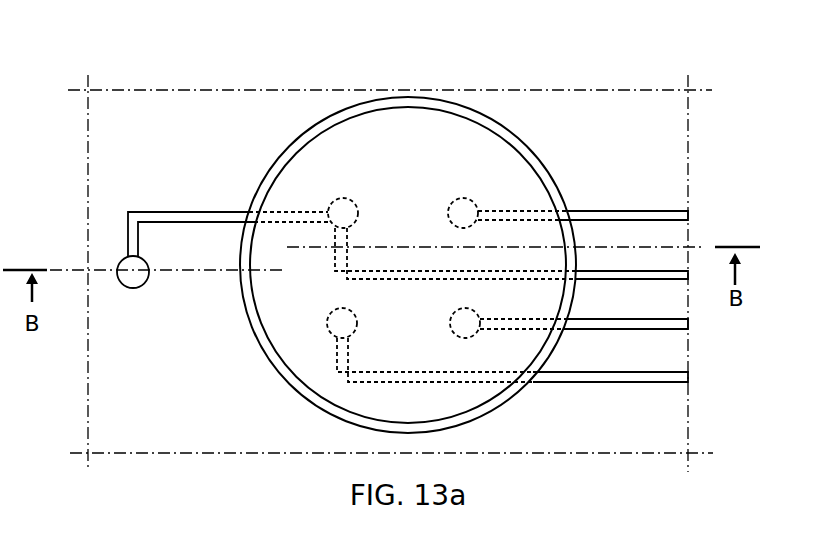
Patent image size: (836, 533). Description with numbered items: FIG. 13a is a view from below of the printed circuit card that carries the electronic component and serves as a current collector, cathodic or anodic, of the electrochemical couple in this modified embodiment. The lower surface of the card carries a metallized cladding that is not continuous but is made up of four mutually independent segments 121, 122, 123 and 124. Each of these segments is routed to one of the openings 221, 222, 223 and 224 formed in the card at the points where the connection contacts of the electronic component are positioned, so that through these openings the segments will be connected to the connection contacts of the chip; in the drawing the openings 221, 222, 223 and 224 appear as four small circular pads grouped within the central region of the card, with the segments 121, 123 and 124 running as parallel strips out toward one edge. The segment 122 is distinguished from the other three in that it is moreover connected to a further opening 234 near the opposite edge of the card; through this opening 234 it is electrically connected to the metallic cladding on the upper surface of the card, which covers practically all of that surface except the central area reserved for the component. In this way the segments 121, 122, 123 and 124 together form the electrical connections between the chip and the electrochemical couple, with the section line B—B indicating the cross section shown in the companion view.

The opening 234 is at (127, 263).
The segment 122 is at (190, 215).
The opening 222 is at (340, 210).
The opening 221 is at (463, 212).
The opening 223 is at (343, 322).
The opening 224 is at (464, 322).
The segment 121 is at (577, 212).
The segment 123 is at (666, 375).
The segment 124 is at (618, 325).